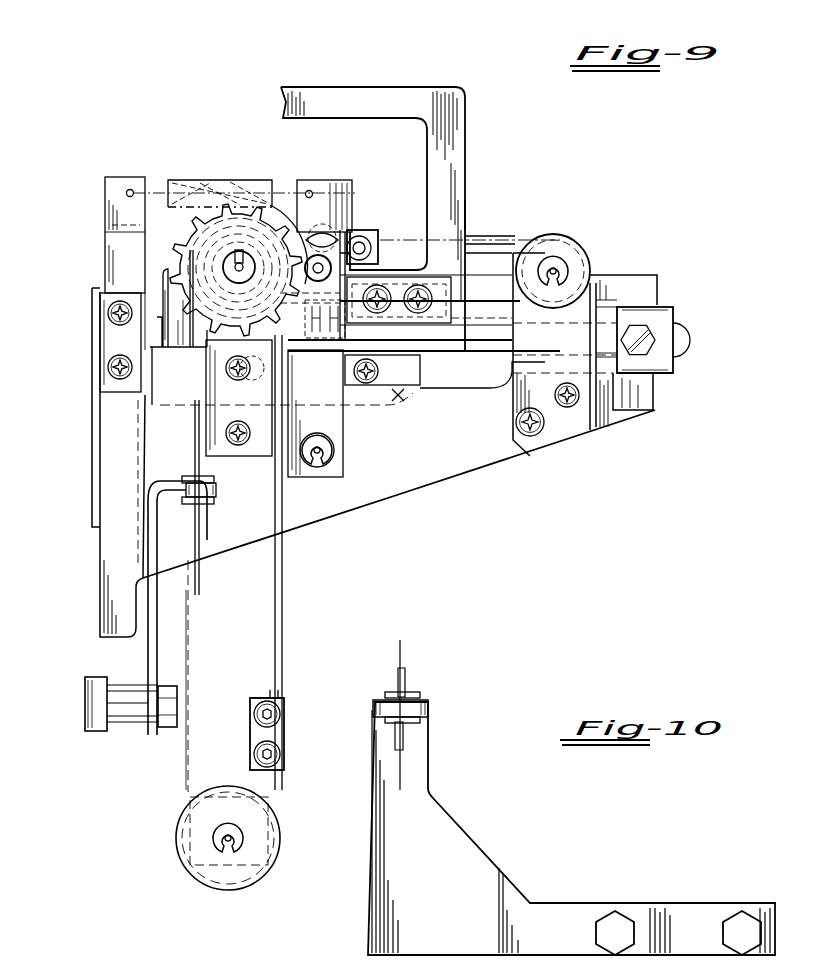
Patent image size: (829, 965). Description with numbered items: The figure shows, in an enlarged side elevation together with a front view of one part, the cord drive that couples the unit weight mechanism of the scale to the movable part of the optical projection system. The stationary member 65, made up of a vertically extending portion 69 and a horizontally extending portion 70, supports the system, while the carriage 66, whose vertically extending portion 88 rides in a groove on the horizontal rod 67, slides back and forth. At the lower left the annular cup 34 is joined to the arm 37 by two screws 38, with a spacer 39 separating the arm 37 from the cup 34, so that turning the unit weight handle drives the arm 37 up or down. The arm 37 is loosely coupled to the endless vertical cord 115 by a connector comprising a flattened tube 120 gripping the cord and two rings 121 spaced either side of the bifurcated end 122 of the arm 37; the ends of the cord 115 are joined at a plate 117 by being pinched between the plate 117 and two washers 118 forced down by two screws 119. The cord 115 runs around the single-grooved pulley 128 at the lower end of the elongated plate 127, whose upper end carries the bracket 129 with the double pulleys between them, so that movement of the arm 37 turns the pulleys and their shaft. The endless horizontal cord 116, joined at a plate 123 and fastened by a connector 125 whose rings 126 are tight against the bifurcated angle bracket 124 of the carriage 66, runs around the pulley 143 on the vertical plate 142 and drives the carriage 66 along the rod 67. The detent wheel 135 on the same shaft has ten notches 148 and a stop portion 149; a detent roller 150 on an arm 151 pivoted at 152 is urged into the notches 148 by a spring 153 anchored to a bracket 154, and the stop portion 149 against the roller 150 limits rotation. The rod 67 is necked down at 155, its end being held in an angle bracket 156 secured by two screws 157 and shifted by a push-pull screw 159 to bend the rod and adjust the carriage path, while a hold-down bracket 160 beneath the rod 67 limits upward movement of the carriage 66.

In FIG. 9, the annular cup 34 is at (85, 724).
In FIG. 9, the arm 37 is at (148, 662).
In FIG. 10, the arm 37 is at (571, 828).
In FIG. 9, the screws 38 is at (168, 728).
In FIG. 10, the screws 38 is at (729, 913).
In FIG. 9, the spacer 39 is at (122, 730).
In FIG. 9, the stationary member 65 is at (489, 472).
In FIG. 9, the carriage 66 is at (477, 212).
In FIG. 9, the horizontal rod 67 is at (437, 388).
In FIG. 9, the vertically extending portion 69 is at (92, 350).
In FIG. 9, the horizontally extending portion 70 is at (406, 492).
In FIG. 9, the vertically extending portion 88 is at (330, 88).
In FIG. 9, the vertical cord 115 is at (282, 592).
In FIG. 9, the horizontal cord 116 is at (478, 240).
In FIG. 9, the plate 117 is at (276, 700).
In FIG. 9, the washers 118 is at (284, 735).
In FIG. 9, the screws 119 is at (254, 752).
In FIG. 9, the tube 120 is at (195, 455).
In FIG. 10, the tube 120 is at (408, 690).
In FIG. 9, the rings 121 is at (184, 476).
In FIG. 10, the rings 121 is at (420, 696).
In FIG. 9, the bifurcated end 122 is at (216, 490).
In FIG. 10, the bifurcated end 122 is at (428, 708).
In FIG. 9, the plate 123 is at (370, 235).
In FIG. 9, the bifurcated angle bracket 124 is at (452, 290).
In FIG. 9, the connector 125 is at (343, 328).
In FIG. 9, the rings 126 is at (432, 346).
In FIG. 9, the elongated plate 127 is at (214, 872).
In FIG. 9, the pulley 128 is at (268, 872).
In FIG. 9, the bracket 129 is at (222, 456).
In FIG. 9, the detent wheel 135 is at (291, 193).
In FIG. 9, the vertical plate 142 is at (513, 410).
In FIG. 9, the pulley 143 is at (566, 248).
In FIG. 9, the notches 148 is at (225, 270).
In FIG. 9, the stop portion 149 is at (324, 230).
In FIG. 9, the detent roller 150 is at (335, 245).
In FIG. 9, the arm 151 is at (343, 433).
In FIG. 9, the pivot 152 is at (330, 460).
In FIG. 9, the spring 153 is at (240, 179).
In FIG. 9, the bracket 154 is at (105, 197).
In FIG. 9, the necked down part 155 is at (148, 315).
In FIG. 9, the angle bracket 156 is at (660, 312).
In FIG. 9, the screws 157 is at (690, 344).
In FIG. 9, the push-pull screw 159 is at (657, 375).
In FIG. 9, the hold-down bracket 160 is at (405, 395).